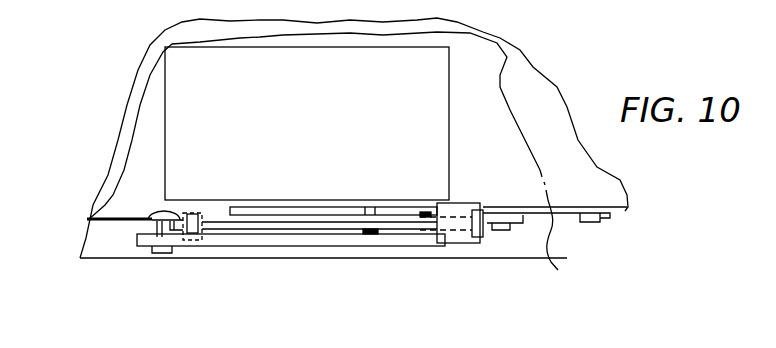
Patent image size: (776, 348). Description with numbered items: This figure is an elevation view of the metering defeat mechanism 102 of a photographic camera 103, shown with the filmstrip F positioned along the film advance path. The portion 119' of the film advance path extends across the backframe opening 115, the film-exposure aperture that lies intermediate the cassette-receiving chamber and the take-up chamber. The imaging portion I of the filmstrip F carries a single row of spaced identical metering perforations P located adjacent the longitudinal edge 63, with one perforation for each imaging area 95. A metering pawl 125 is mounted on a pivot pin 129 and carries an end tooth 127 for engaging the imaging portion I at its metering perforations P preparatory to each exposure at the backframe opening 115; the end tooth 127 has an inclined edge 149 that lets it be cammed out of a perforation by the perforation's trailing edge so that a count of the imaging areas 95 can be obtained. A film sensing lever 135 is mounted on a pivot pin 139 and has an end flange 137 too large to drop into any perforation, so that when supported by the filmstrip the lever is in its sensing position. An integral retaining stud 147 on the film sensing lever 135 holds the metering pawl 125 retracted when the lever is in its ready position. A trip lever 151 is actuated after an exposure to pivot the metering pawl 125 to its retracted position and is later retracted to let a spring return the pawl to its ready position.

The longitudinal edge 63 is at (108, 258).
The imaging area 95 is at (183, 93).
The metering defeat mechanism 102 is at (252, 256).
The photographic camera 103 is at (257, 342).
The backframe opening 115 is at (167, 128).
The portion of the film advance path 119' is at (307, 123).
The metering pawl 125 is at (290, 235).
The end tooth 127 is at (194, 220).
The pivot pin 129 is at (370, 235).
The film sensing lever 135 is at (423, 246).
The end flange 137 is at (460, 203).
The pivot pin 139 is at (158, 253).
The retaining stud 147 is at (426, 210).
The inclined edge 149 is at (150, 222).
The trip lever 151 is at (555, 233).
The imaging portion I is at (147, 167).
The filmstrip F is at (128, 200).
The metering perforations P is at (200, 213).